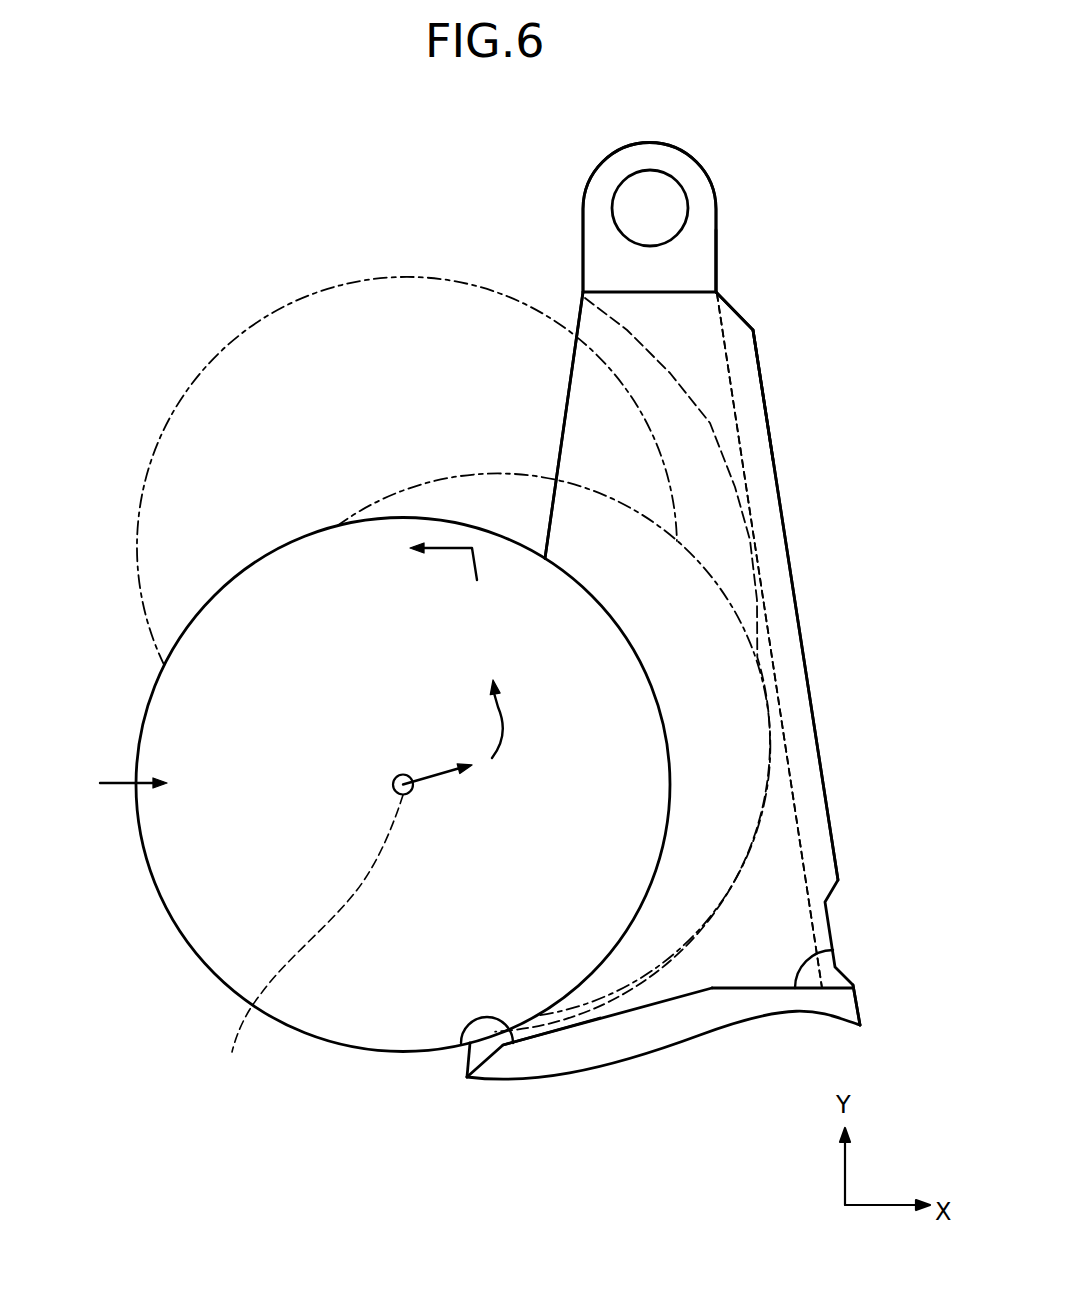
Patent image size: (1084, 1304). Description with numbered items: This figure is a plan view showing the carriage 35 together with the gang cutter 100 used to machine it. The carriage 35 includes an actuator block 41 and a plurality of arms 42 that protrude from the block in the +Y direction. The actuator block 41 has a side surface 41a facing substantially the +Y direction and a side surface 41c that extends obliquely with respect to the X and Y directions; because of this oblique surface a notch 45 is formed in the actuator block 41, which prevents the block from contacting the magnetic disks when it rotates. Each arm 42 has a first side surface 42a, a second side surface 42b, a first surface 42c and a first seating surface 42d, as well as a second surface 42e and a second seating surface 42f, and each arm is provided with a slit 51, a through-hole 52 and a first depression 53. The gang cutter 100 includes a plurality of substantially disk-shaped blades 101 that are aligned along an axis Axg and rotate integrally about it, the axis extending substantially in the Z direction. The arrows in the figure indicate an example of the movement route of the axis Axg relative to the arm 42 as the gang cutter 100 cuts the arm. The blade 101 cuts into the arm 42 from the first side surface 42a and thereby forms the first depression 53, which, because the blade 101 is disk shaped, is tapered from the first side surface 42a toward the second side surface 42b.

The carriage 35 is at (870, 1004).
The actuator block 41 is at (596, 1057).
The side surface 41a is at (833, 950).
The side surface 41c is at (468, 1040).
The arm 42 is at (705, 333).
The first side surface 42a is at (580, 317).
The second side surface 42b is at (760, 373).
The first surface 42c is at (705, 333).
The first seating surface 42d is at (703, 207).
The second surface 42e is at (710, 355).
The second seating surface 42f is at (703, 228).
The notch 45 is at (548, 1008).
The slit 51 is at (735, 410).
The through-hole 52 is at (661, 185).
The first depression 53 is at (736, 514).
The gang cutter 100 is at (137, 684).
The blade 101 is at (153, 745).
The axis of the blade Axg is at (311, 931).